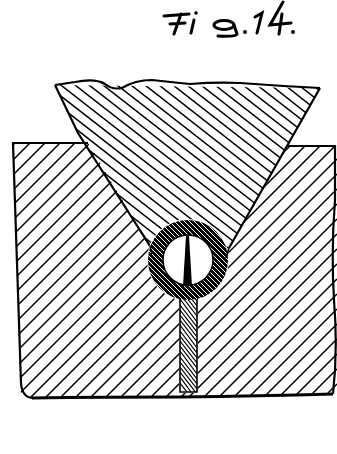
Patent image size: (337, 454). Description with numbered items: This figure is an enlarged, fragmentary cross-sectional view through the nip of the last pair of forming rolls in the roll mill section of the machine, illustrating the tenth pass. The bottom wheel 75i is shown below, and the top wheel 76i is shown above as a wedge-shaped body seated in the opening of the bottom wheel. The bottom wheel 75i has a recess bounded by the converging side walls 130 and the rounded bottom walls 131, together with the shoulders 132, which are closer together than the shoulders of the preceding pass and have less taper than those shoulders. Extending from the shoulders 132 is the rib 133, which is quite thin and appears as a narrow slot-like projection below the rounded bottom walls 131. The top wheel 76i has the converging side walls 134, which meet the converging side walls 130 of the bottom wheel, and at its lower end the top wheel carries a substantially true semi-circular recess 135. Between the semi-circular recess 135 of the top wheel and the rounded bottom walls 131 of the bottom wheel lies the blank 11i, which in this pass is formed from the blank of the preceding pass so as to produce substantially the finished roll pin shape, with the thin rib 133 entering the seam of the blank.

The bottom wheel 75i is at (115, 378).
The wedge-shaped insert 76i is at (106, 104).
The converging side walls 134 is at (80, 134).
The semi-circular recess 135 is at (161, 215).
The converging side walls 130 is at (143, 253).
The rib 133 is at (205, 226).
The blank 11i is at (207, 226).
The rounded bottom walls 131 is at (212, 291).
The shoulders 132 is at (181, 306).